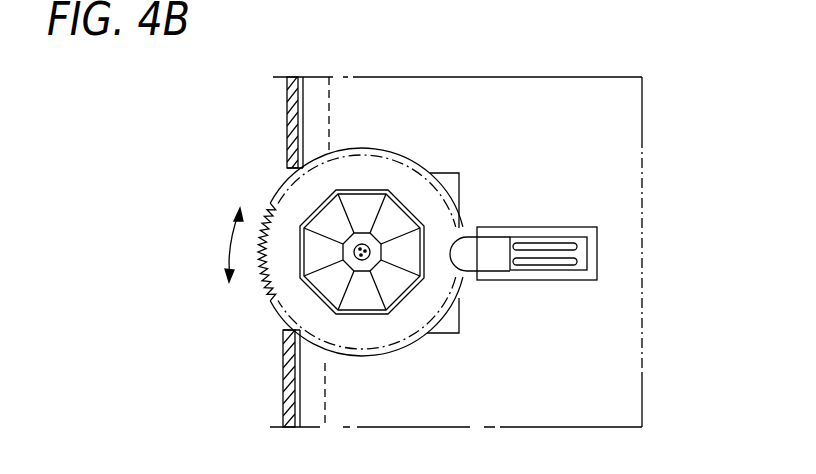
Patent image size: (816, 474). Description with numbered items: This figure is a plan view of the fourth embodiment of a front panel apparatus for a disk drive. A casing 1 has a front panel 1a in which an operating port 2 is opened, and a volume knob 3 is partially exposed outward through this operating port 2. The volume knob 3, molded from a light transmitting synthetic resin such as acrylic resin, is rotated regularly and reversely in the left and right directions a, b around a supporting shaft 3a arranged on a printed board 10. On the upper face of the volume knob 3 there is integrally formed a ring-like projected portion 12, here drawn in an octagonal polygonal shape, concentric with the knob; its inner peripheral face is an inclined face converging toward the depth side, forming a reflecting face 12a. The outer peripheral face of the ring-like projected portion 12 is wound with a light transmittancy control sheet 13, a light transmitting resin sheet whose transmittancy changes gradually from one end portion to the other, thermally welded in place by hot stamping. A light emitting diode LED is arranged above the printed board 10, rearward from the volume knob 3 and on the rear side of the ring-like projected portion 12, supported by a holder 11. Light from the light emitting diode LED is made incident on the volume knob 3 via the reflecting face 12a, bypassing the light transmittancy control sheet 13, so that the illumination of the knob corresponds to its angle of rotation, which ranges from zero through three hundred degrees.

The casing 1 is at (252, 258).
The front panel 1a is at (288, 139).
The operating port 2 is at (283, 330).
The volume knob 3 is at (420, 340).
The supporting shaft 3a is at (363, 272).
The printed board 10 is at (628, 110).
The holder 11 is at (563, 232).
The ring-like projected portion 12 is at (383, 186).
The reflecting face 12a is at (358, 213).
The light transmittancy control sheet 13 is at (412, 200).
The light emitting diode LED is at (495, 257).
The left rotating direction a is at (240, 290).
The right rotating direction b is at (235, 233).